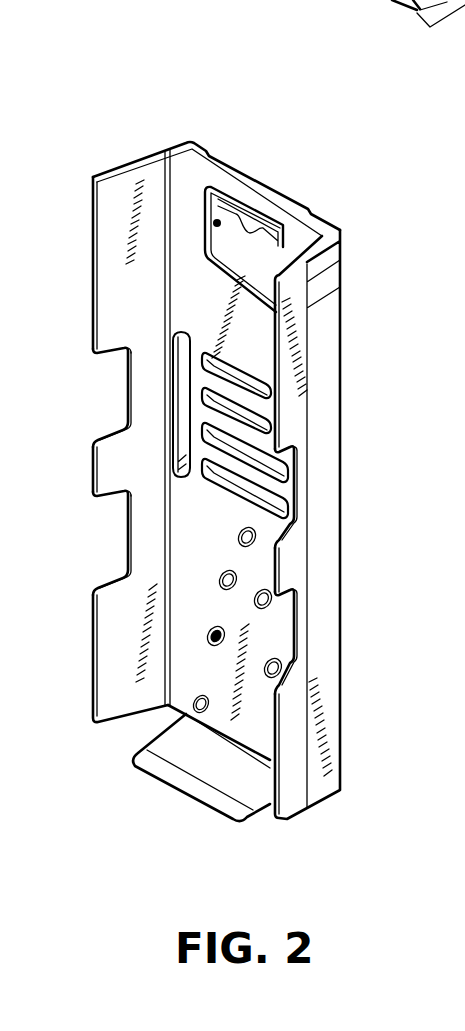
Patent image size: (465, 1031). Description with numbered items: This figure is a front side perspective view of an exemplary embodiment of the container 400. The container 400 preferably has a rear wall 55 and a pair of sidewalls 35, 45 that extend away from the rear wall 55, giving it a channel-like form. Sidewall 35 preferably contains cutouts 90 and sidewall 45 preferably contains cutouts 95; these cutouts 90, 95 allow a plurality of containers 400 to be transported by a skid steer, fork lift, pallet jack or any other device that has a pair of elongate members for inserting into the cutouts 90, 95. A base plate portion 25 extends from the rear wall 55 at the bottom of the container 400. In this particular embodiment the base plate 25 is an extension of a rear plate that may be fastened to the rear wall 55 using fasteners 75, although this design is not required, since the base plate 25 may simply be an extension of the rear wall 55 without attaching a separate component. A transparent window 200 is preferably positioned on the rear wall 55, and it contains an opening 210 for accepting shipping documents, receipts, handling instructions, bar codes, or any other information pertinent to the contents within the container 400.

The container 400 is at (135, 100).
The transparent window 200 is at (214, 222).
The opening 210 is at (245, 226).
The rear wall 55 is at (198, 300).
The cutouts 90 is at (97, 406).
The sidewall 35 is at (130, 620).
The fasteners 75 is at (209, 641).
The base plate portion 25 is at (218, 773).
The cutouts 95 is at (275, 529).
The sidewall 45 is at (290, 740).